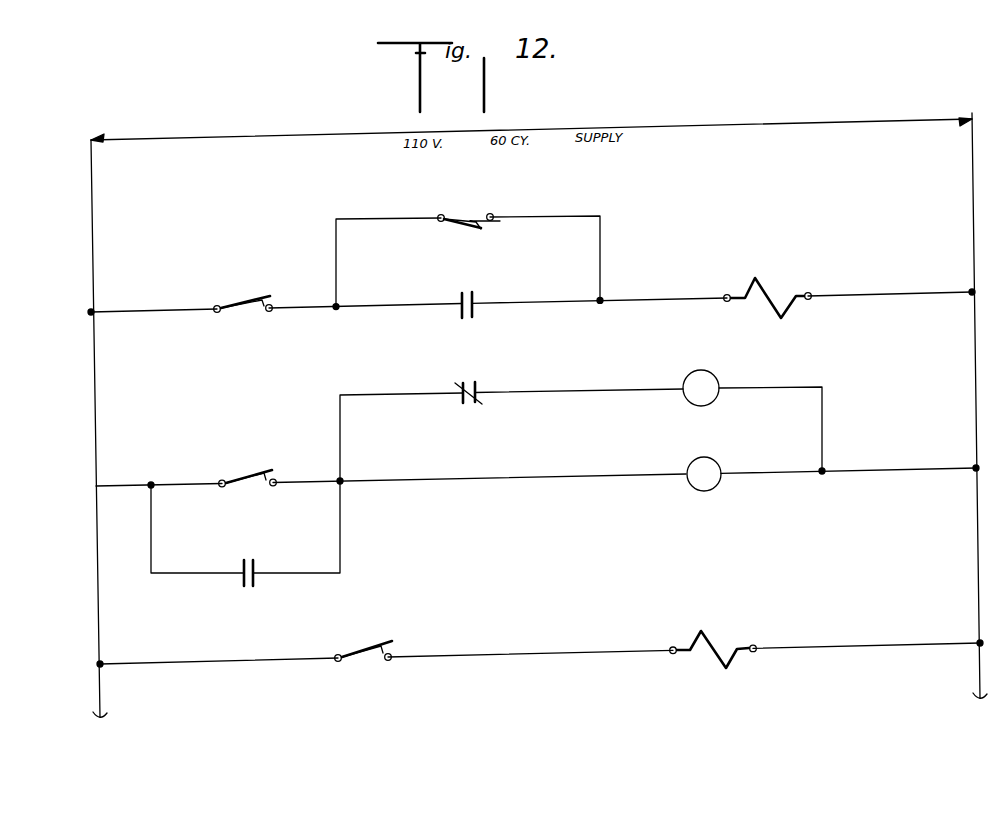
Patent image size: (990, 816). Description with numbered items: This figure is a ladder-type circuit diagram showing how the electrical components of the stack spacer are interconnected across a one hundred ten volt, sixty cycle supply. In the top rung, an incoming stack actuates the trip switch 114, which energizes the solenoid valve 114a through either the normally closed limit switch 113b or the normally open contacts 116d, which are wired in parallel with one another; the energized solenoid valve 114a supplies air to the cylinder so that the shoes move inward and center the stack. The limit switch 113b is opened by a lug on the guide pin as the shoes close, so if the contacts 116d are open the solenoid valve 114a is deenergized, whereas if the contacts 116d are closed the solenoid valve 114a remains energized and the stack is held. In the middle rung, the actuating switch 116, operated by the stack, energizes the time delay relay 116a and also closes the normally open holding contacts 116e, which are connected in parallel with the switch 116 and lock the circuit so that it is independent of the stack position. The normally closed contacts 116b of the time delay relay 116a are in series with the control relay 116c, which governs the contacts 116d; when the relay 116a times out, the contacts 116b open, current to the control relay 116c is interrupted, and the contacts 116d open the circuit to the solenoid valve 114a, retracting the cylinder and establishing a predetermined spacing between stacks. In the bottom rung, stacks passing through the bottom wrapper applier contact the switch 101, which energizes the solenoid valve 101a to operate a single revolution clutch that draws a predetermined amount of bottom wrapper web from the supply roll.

The trip switch 114 is at (257, 303).
The limit switch 113b is at (500, 214).
The normally open contacts 116d is at (477, 298).
The solenoid valve 114a is at (777, 297).
The actuating switch 116 is at (262, 471).
The normally closed contacts 116b is at (480, 383).
The control relay 116c is at (717, 376).
The time delay relay 116a is at (720, 463).
The normally open holding contacts 116e is at (248, 558).
The switch 101 is at (373, 643).
The solenoid valve 101a is at (718, 644).